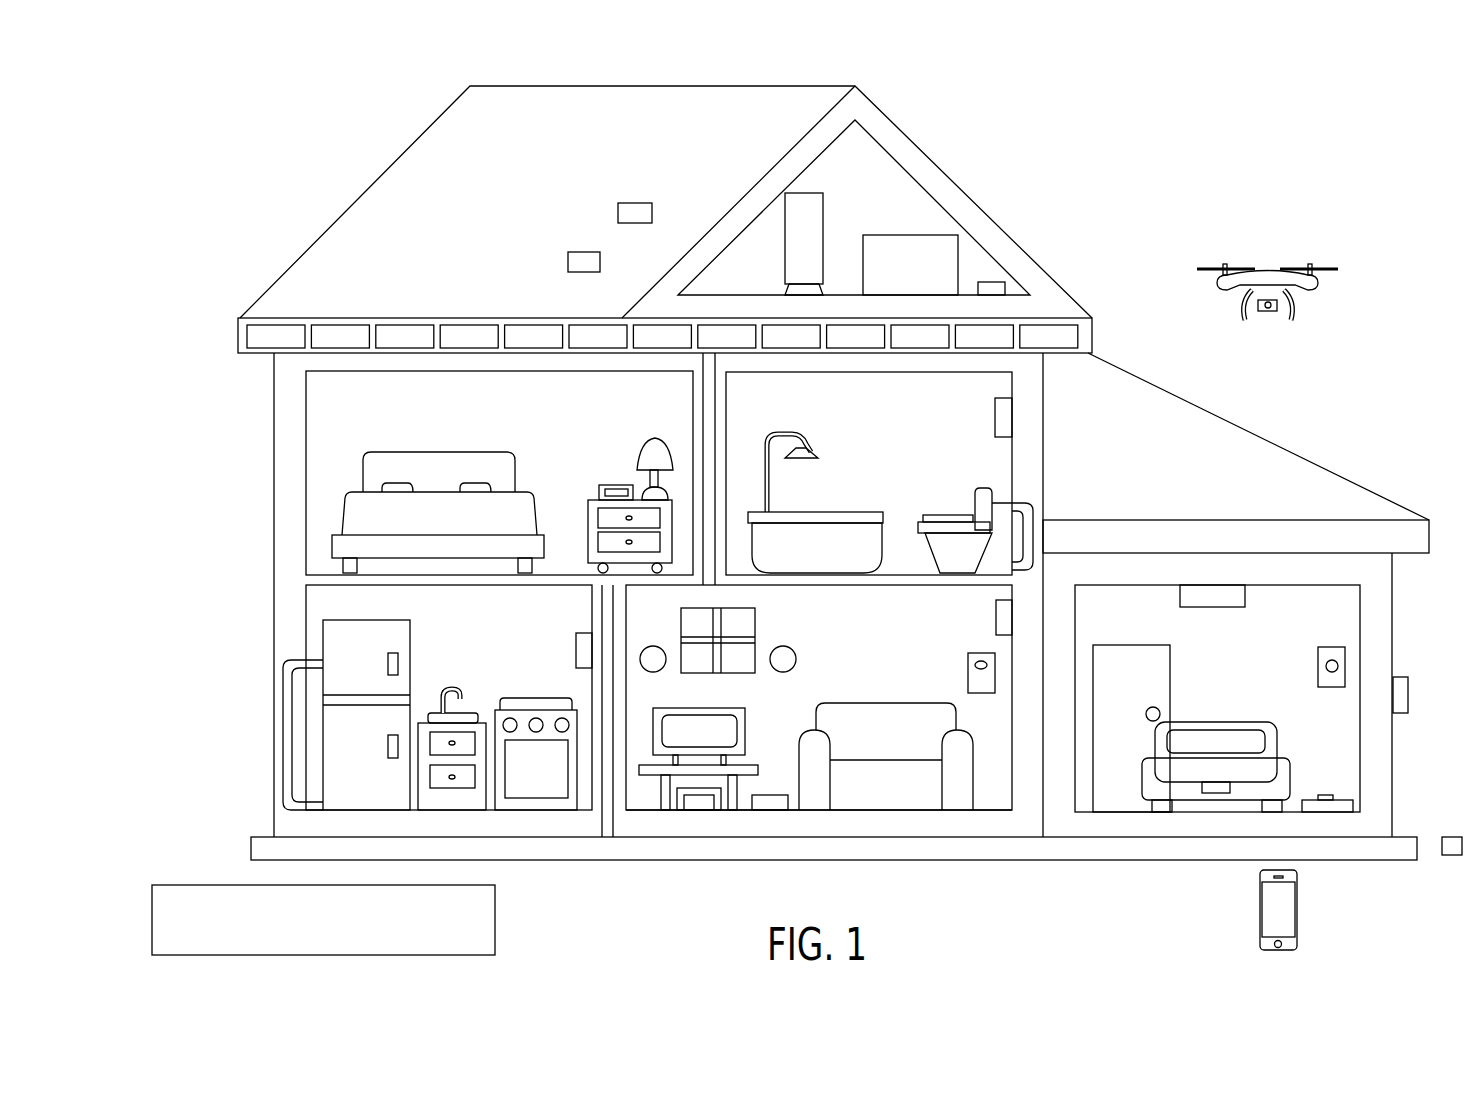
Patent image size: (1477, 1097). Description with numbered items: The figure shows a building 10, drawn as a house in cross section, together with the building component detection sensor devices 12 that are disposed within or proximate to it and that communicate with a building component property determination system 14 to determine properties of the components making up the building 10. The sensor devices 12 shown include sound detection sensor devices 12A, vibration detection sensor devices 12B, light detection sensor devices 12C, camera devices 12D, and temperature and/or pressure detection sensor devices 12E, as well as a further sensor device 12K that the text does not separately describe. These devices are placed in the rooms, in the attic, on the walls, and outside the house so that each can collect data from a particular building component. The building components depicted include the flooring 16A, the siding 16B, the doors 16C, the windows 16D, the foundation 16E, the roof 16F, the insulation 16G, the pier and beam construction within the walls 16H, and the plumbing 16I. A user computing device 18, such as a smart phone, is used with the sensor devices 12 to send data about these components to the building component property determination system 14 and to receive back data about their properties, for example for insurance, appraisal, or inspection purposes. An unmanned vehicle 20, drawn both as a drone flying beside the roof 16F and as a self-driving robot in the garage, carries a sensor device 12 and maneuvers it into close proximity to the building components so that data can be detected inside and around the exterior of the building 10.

The building 10 is at (1262, 182).
The building component detection sensor device 12 is at (1268, 311).
The sound detection sensor device 12A is at (634, 203).
The vibration detection sensor device 12B is at (585, 252).
The light detection sensor device 12C is at (797, 655).
The camera device 12D is at (1450, 858).
The temperature and/or pressure detection sensor device 12E is at (995, 282).
The sensor 12K is at (995, 415).
The building component property determination system 14 is at (152, 920).
The flooring 16A is at (744, 810).
The siding 16B is at (274, 630).
The doors 16C is at (1170, 665).
The windows 16D is at (758, 623).
The foundation 16E is at (980, 860).
The roof 16F is at (680, 104).
The insulation 16G is at (263, 337).
The pier and beam construction within walls 16H is at (602, 623).
The plumbing 16I is at (1043, 492).
The user computing device 18 is at (1272, 900).
The unmanned vehicle 20 is at (1268, 273).